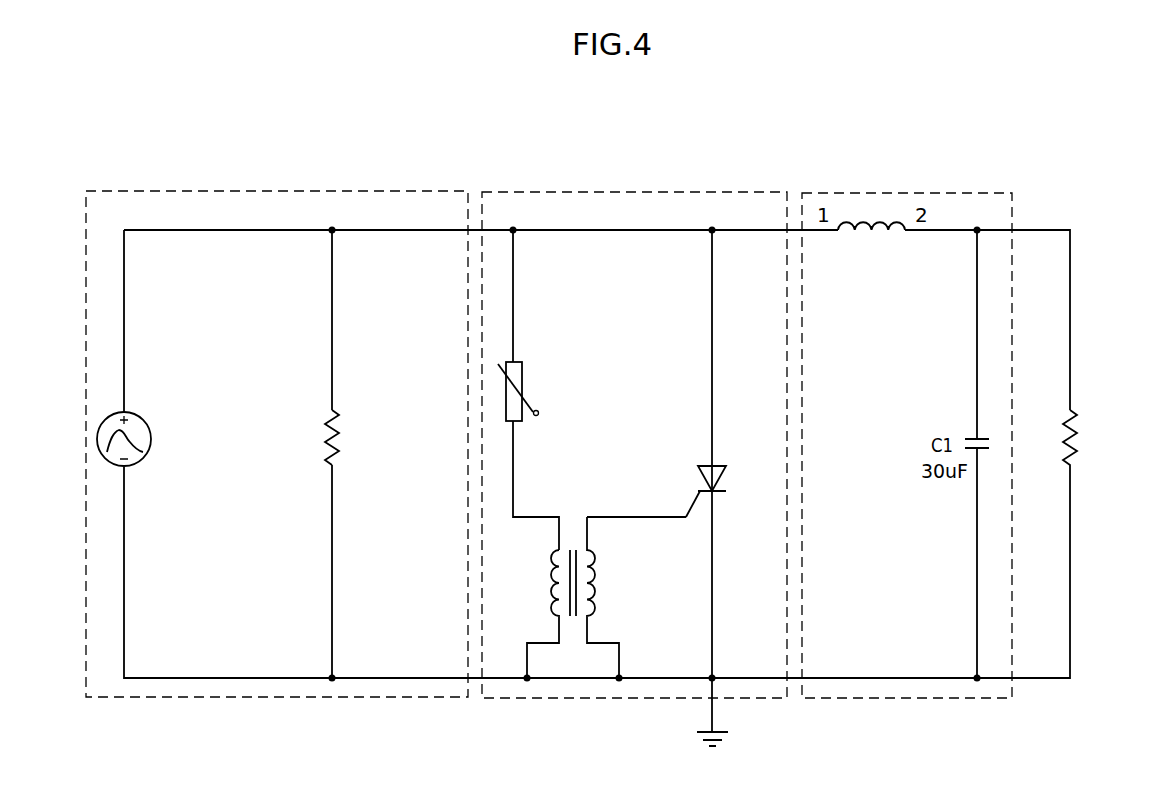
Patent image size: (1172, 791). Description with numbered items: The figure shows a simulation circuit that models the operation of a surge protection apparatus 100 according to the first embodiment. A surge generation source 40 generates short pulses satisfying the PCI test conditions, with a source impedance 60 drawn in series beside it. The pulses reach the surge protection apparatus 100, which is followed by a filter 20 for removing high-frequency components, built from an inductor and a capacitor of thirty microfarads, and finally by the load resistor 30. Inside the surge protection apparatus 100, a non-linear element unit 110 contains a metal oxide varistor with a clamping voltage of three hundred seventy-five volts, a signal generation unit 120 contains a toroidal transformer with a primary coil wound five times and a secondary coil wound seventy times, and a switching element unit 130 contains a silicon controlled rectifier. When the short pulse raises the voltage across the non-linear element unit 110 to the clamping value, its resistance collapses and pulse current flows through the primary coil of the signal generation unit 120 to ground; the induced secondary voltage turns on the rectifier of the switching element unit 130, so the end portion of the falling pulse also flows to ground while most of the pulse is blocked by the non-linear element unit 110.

The filter 20 is at (925, 193).
The load resistor Load_Z 30 is at (1071, 413).
The surge generation source 40 is at (298, 191).
The source impedance (Source_Z) 60 is at (389, 437).
The surge protection apparatus 100 is at (636, 192).
The non-linear element unit 110 is at (517, 358).
The signal generation unit 120 is at (594, 581).
The switching element unit 130 is at (708, 466).